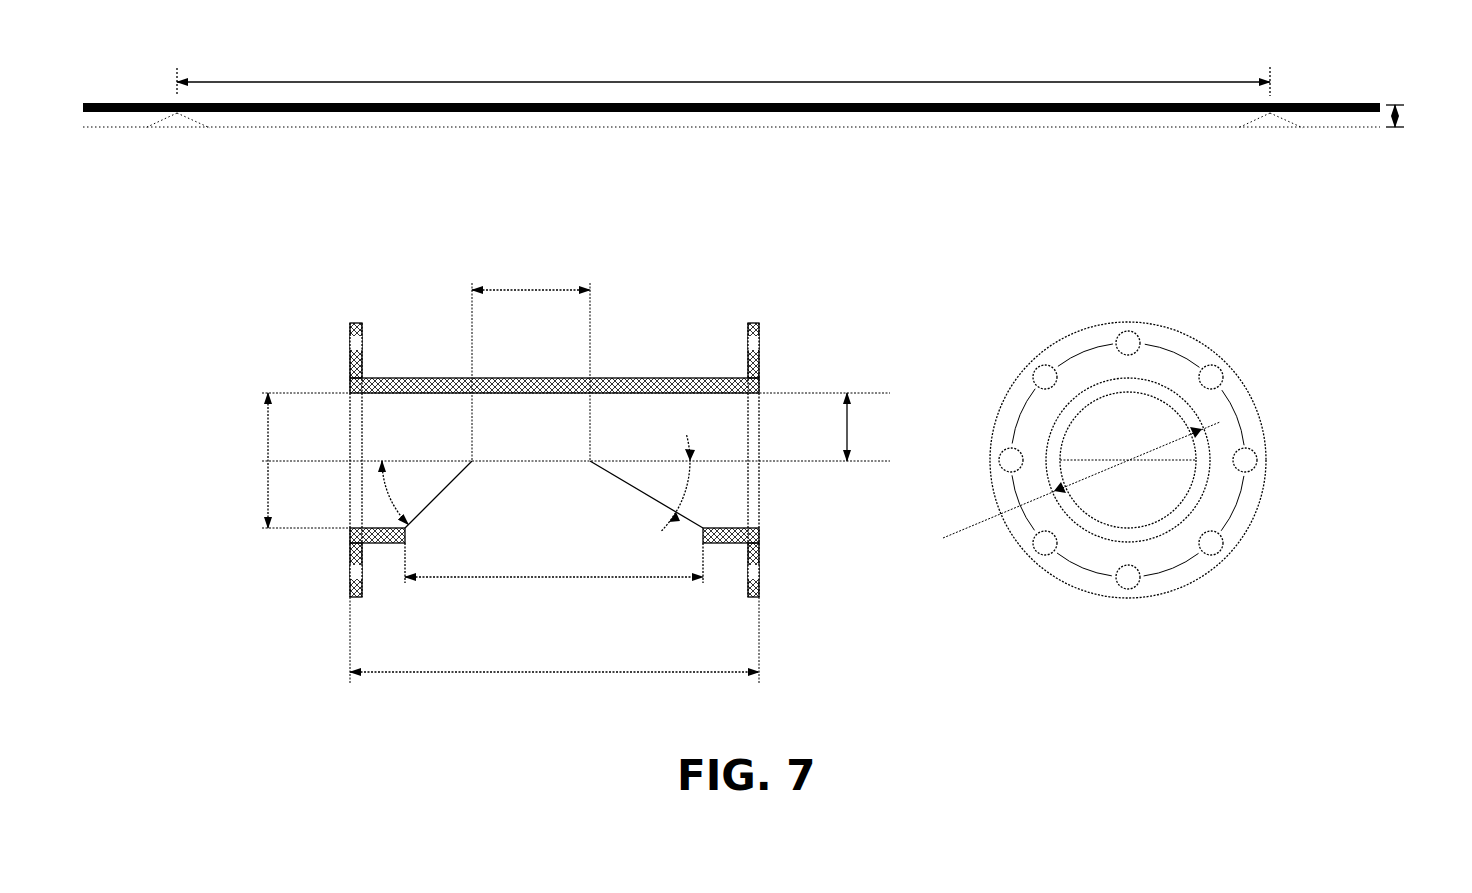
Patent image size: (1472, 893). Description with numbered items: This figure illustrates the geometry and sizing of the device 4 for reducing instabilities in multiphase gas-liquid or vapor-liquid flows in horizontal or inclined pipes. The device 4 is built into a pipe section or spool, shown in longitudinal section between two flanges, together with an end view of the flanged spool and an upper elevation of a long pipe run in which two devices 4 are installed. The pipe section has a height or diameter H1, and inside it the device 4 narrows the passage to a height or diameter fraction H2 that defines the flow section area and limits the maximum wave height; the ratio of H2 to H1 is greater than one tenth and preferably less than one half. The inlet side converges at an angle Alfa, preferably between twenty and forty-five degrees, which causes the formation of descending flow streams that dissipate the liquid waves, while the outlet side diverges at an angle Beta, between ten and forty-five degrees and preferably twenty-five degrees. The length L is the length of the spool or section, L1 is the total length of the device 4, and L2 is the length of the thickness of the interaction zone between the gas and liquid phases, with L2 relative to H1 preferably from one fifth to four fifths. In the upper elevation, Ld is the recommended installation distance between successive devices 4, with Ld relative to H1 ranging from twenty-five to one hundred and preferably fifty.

The device 4 is at (175, 115).
The distance between devices Ld is at (1135, 81).
The height or diameter of the pipe section H1 is at (1403, 113).
The height or diameter fraction H2 is at (866, 427).
The length of the spool or section L is at (554, 651).
The total length of the device L1 is at (554, 592).
The length of the thickness of the interaction zone L2 is at (531, 372).
The converging angle of the inlet section Alfa is at (408, 493).
The divergent angle of the outlet section Beta is at (701, 483).